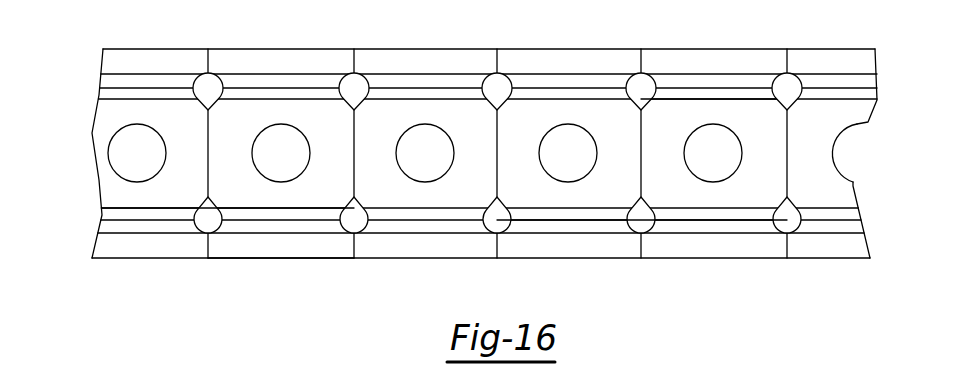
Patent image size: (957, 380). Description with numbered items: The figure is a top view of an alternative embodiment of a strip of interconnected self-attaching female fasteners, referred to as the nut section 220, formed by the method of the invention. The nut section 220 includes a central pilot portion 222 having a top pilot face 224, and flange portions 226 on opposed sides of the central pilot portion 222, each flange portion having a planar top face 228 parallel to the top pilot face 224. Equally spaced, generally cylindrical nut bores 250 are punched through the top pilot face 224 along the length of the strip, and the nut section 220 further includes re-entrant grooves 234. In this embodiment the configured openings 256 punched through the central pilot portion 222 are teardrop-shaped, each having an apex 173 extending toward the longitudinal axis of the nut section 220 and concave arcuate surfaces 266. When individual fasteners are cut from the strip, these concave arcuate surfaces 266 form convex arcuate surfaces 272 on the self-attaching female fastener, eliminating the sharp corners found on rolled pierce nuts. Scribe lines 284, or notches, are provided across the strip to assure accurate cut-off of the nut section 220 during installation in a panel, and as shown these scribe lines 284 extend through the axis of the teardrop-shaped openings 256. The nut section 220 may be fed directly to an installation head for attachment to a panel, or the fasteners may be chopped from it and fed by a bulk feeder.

The nut section 220 is at (71, 99).
The central pilot portion 222 is at (547, 113).
The top pilot face 224 is at (667, 112).
The flange portions 226 is at (257, 258).
The planar top face 228 is at (390, 250).
The re-entrant grooves 234 is at (695, 224).
The nut bores 250 is at (165, 167).
The configured openings 256 is at (790, 90).
The concave arcuate surfaces 266 is at (500, 215).
The convex arcuate surfaces 272 is at (640, 204).
The scribe lines 284 is at (641, 62).
The apex 173 is at (208, 197).